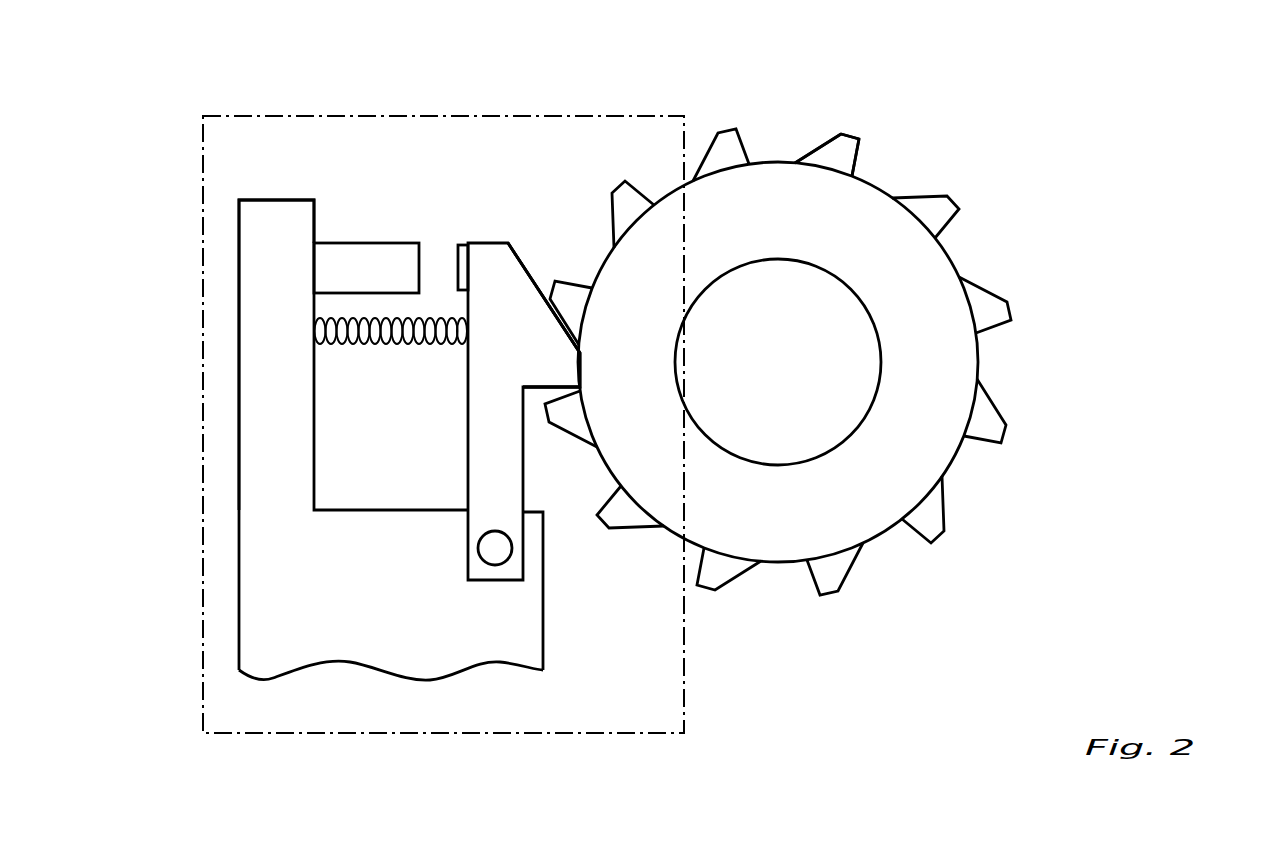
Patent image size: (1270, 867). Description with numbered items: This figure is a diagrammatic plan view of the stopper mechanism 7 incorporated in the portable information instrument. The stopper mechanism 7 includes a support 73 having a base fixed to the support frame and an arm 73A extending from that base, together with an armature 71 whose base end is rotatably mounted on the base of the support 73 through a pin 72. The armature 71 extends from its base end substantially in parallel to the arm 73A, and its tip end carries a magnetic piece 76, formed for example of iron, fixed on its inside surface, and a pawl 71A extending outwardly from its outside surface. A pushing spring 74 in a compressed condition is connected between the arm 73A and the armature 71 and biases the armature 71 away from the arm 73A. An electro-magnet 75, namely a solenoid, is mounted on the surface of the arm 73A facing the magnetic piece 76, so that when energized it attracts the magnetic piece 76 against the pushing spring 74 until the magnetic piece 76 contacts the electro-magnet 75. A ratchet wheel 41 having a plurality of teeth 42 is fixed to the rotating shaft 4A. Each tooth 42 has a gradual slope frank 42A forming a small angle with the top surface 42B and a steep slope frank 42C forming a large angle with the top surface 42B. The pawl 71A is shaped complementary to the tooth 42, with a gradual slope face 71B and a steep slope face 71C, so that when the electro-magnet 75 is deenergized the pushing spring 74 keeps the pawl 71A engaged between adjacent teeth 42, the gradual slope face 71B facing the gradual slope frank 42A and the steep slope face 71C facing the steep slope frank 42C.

The stopper mechanism 7 is at (315, 733).
The support 73 is at (530, 630).
The arm 73A is at (272, 280).
The electro-magnet 75 is at (360, 253).
The pushing spring 74 is at (378, 348).
The magnetic piece 76 is at (463, 262).
The armature 71 is at (493, 278).
The pawl 71A is at (540, 357).
The gradual slope face 71B is at (533, 268).
The steep slope face 71C is at (536, 388).
The pin 72 is at (507, 550).
The ratchet wheel 41 is at (927, 285).
The rotating shaft 4A is at (855, 365).
The tooth 42 is at (840, 568).
The gradual slope frank 42A is at (817, 142).
The top surface 42B is at (847, 130).
The steep slope frank 42C is at (857, 163).